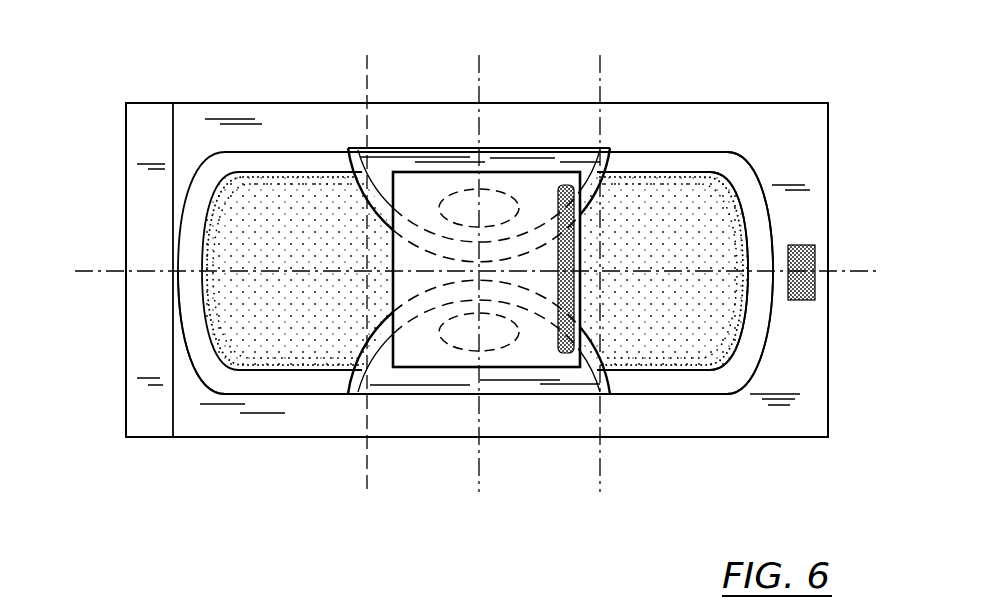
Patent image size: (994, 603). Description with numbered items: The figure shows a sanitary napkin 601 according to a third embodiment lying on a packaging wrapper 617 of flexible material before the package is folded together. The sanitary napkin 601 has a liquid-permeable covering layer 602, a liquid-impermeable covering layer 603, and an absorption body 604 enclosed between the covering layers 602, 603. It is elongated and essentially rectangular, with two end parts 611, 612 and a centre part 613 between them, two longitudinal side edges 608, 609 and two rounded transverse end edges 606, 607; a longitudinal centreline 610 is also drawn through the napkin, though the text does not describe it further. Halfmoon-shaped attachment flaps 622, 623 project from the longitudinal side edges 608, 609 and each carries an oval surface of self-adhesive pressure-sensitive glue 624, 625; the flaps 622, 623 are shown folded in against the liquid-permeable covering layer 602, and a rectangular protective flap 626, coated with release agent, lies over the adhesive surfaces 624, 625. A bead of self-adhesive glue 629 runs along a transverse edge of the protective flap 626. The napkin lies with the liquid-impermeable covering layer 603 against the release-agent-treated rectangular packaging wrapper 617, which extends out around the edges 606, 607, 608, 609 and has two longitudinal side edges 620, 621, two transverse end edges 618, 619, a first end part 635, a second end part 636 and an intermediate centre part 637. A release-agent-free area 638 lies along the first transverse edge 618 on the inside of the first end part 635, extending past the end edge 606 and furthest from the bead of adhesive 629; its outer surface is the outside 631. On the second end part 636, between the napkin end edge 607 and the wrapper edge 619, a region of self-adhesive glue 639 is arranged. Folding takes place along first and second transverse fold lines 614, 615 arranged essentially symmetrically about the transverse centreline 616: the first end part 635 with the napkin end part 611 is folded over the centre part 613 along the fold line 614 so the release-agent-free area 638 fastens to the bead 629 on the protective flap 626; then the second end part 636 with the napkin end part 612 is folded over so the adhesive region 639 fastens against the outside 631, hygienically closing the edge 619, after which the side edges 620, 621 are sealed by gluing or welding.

The sanitary napkin 601 is at (724, 368).
The liquid-permeable covering layer 602 is at (713, 182).
The liquid-impermeable covering layer 603 is at (675, 158).
The absorption body 604 is at (657, 355).
The transverse end edge 606 is at (187, 343).
The transverse end edge 607 is at (766, 332).
The longitudinal side edge 608 is at (260, 402).
The longitudinal side edge 609 is at (270, 150).
The horizontal center line 610 is at (117, 268).
The end part 611 is at (233, 352).
The end part 612 is at (723, 197).
The centre part 613 is at (388, 372).
The first transverse fold line 614 is at (367, 93).
The second transverse fold line 615 is at (601, 88).
The transverse centreline 616 is at (481, 93).
The packaging wrapper 617 is at (807, 417).
The transverse end edge 618 is at (126, 320).
The transverse end edge 619 is at (828, 398).
The longitudinal side edge 620 is at (200, 103).
The longitudinal side edge 621 is at (334, 412).
The attachment flap 622 is at (447, 378).
The attachment flap 623 is at (398, 172).
The adhesive surface 624 is at (493, 350).
The adhesive surface 625 is at (463, 200).
The protective flap 626 is at (538, 353).
The bead of self-adhesive glue 629 is at (565, 358).
The outside of first end part 631 is at (198, 142).
The first end part 635 is at (195, 415).
The second end part 636 is at (768, 422).
The intermediate centre part 637 is at (547, 130).
The release-agent-free area 638 is at (148, 437).
The region of self-adhesive glue 639 is at (800, 245).